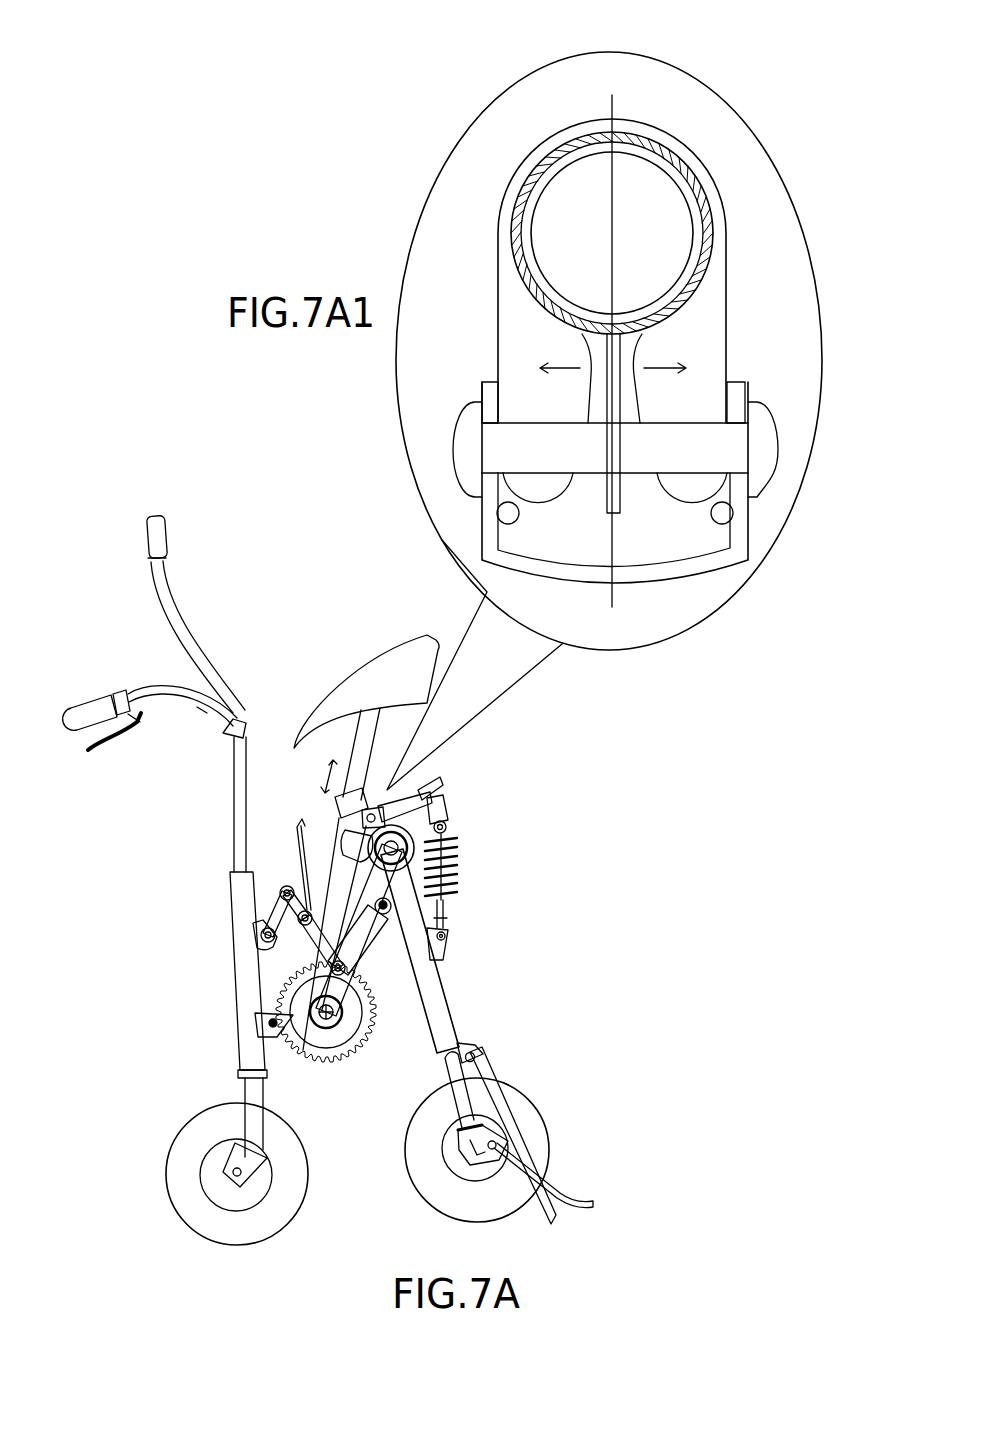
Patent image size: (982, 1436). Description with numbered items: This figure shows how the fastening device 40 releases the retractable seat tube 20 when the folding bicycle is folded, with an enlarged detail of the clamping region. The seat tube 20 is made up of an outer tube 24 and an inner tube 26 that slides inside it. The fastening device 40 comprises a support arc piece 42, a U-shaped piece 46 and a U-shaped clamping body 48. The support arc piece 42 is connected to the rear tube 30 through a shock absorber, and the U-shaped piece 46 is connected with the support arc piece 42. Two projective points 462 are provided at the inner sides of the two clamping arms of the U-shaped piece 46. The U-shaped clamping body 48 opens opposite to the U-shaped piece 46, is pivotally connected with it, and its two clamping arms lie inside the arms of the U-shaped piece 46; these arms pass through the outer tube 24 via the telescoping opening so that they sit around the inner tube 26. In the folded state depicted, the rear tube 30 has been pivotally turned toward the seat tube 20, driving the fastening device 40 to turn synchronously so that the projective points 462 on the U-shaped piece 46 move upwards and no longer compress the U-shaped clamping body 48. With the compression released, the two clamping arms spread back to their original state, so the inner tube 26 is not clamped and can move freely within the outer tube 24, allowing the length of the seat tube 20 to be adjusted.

In FIG. 7A, the retractable seat tube 20 is at (322, 810).
In FIG. 7A1, the outer tube 24 is at (725, 200).
In FIG. 7A, the outer tube 24 is at (330, 877).
In FIG. 7A1, the inner tube 26 is at (688, 148).
In FIG. 7A, the inner tube 26 is at (368, 733).
In FIG. 7A, the rear tube 30 is at (437, 1012).
In FIG. 7A, the fastening device 40 is at (466, 779).
In FIG. 7A, the support arc piece 42 is at (442, 792).
In FIG. 7A1, the U-shaped piece 46 is at (680, 568).
In FIG. 7A1, the U-shaped clamping body 48 is at (718, 318).
In FIG. 7A1, the projective points 462 is at (507, 513).